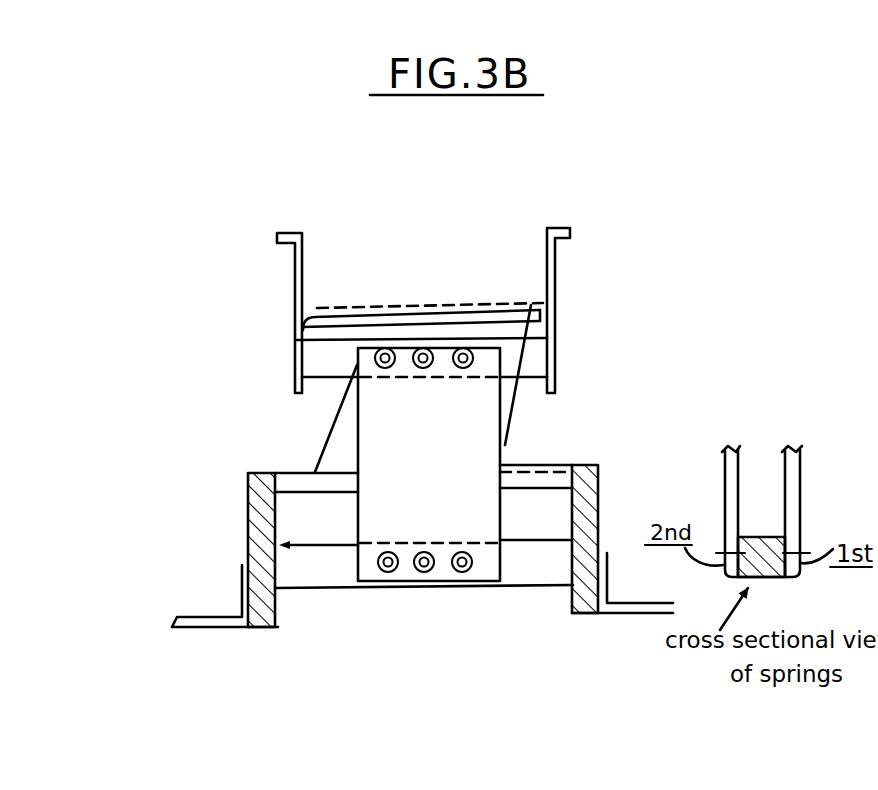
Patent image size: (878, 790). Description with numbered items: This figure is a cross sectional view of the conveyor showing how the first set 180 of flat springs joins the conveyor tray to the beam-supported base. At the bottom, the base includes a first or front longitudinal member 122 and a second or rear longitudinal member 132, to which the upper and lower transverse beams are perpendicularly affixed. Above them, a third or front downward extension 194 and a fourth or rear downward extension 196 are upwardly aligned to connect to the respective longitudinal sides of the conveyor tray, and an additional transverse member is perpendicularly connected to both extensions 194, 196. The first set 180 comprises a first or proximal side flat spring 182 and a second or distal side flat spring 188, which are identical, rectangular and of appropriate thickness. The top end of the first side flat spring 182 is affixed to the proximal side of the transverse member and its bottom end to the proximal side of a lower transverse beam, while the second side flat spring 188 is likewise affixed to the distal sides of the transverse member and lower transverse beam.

The third downward extension 194 is at (431, 310).
The fourth downward extension 196 is at (553, 352).
The first set of flat springs 180 is at (516, 448).
The second longitudinal member 132 is at (588, 493).
The first longitudinal member 122 is at (262, 545).
The second side flat spring 188 is at (722, 500).
The first side flat spring 182 is at (803, 513).